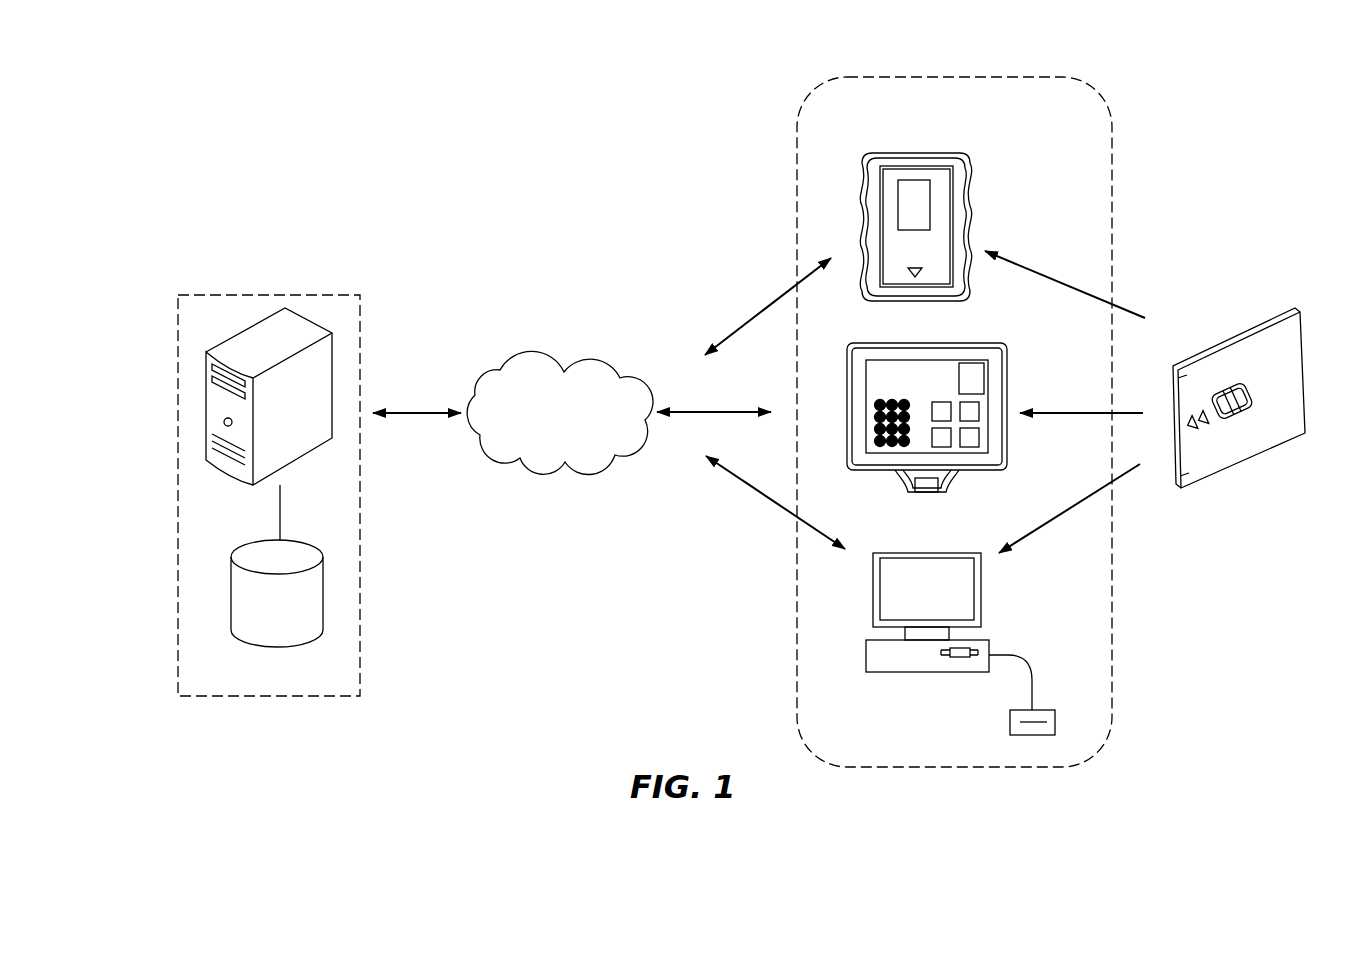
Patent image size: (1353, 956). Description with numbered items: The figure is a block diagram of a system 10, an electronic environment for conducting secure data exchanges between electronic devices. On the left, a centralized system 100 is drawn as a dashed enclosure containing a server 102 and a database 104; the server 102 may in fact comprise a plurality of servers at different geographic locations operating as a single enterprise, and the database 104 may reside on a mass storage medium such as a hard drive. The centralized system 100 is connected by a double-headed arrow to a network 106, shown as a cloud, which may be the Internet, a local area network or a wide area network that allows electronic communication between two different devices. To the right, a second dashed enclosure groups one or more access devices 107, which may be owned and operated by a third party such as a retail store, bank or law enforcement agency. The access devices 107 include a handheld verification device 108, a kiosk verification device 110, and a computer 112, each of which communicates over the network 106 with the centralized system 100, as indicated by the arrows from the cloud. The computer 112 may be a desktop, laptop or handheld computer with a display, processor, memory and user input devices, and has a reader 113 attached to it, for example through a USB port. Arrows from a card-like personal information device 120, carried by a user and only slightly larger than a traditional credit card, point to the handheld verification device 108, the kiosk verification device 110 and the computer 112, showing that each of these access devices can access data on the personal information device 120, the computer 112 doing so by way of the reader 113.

The system 10 is at (442, 163).
The centralized system 100 is at (178, 328).
The server 102 is at (206, 405).
The database 104 is at (230, 598).
The network 106 is at (553, 358).
The access devices 107 is at (797, 178).
The handheld verification device 108 is at (963, 163).
The kiosk verification device 110 is at (1010, 375).
The computer 112 is at (981, 594).
The reader 113 is at (1045, 710).
The personal information device 120 is at (1207, 350).